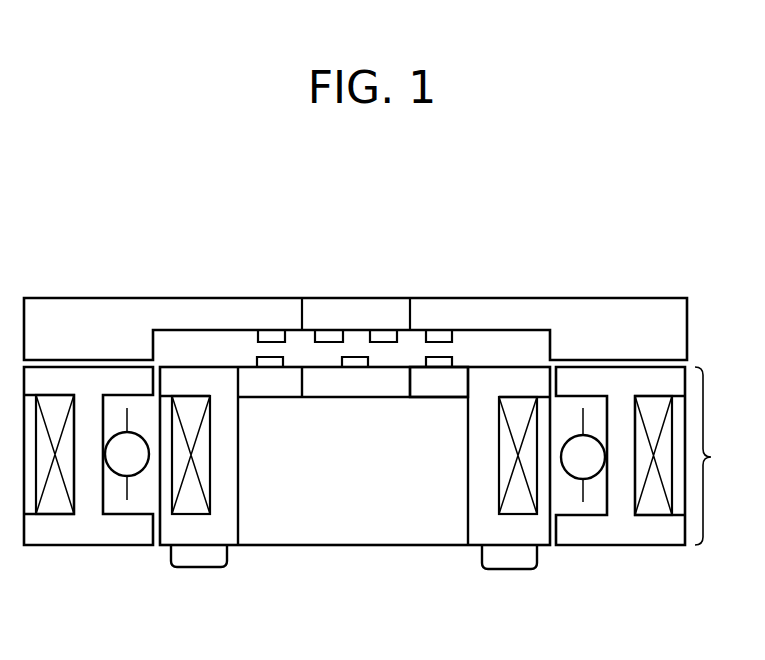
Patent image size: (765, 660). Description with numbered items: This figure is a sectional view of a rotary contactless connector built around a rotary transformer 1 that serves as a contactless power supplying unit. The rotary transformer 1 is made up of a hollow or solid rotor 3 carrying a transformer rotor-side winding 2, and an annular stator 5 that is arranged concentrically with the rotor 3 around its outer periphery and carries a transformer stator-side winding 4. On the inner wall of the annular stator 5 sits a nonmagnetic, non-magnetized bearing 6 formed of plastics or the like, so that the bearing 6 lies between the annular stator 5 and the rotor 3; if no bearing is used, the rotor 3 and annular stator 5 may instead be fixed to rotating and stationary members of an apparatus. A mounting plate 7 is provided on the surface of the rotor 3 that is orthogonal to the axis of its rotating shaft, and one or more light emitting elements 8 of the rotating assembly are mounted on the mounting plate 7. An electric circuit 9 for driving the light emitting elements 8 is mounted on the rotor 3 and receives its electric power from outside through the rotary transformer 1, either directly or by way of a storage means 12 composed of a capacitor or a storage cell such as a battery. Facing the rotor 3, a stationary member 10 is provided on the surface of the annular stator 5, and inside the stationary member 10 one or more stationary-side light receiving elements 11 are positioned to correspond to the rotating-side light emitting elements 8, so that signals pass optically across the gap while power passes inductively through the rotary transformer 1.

The rotary transformer 1 is at (714, 471).
The transformer rotor-side winding 2 is at (518, 495).
The rotor 3 is at (477, 530).
The transformer stator-side winding 4 is at (653, 408).
The annular stator 5 is at (620, 383).
The bearing 6 is at (122, 502).
The mounting plate 7 is at (440, 383).
The light emitting element 8 is at (269, 358).
The electric circuit 9 is at (200, 555).
The stationary member 10 is at (547, 310).
The stationary-side light receiving element 11 is at (383, 338).
The storage means 12 is at (528, 556).